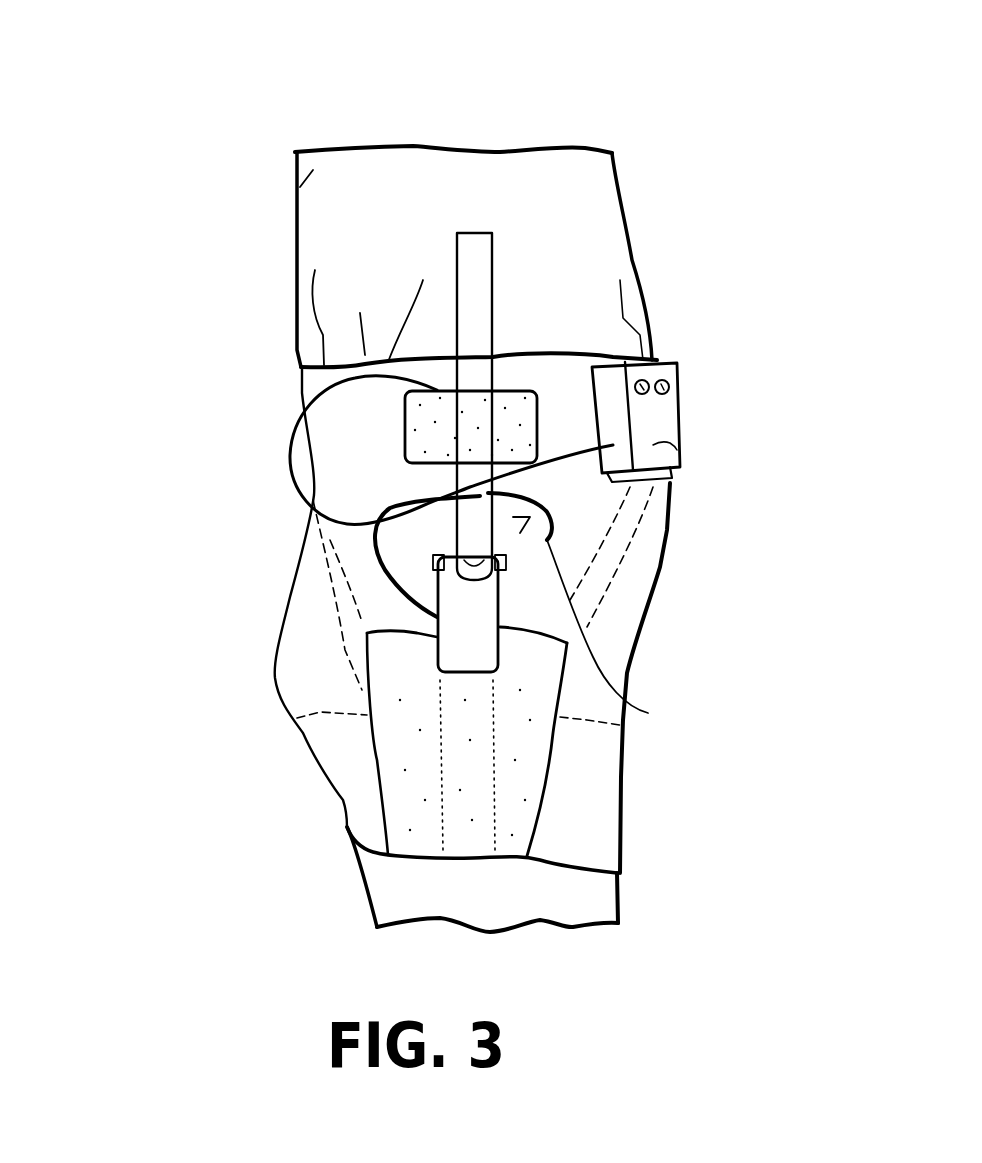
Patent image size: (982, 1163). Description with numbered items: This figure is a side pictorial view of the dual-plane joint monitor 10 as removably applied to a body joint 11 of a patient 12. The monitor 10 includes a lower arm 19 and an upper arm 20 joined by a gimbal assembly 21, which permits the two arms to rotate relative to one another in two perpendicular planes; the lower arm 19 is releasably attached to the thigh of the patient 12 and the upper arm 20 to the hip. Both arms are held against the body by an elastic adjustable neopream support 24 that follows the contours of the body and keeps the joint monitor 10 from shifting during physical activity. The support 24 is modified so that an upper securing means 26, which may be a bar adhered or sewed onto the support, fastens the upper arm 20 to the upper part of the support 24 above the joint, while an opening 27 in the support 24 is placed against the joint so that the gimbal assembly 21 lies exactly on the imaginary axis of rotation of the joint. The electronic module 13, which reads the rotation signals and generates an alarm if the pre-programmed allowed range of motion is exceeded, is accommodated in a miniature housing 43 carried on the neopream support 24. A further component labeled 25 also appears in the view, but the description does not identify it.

The dual-plane joint monitor 10 is at (226, 471).
The body joint 11 is at (610, 625).
The patient 12 is at (411, 190).
The electronic module 13 is at (680, 462).
The lower arm 19 is at (465, 635).
The upper arm 20 is at (480, 249).
The gimbal assembly 21 is at (455, 568).
The elastic adjustable neopream support 24 is at (622, 605).
The lower strap 25 is at (455, 772).
The upper securing means 26 is at (487, 417).
The opening 27 is at (502, 586).
The miniature housing 43 is at (662, 418).